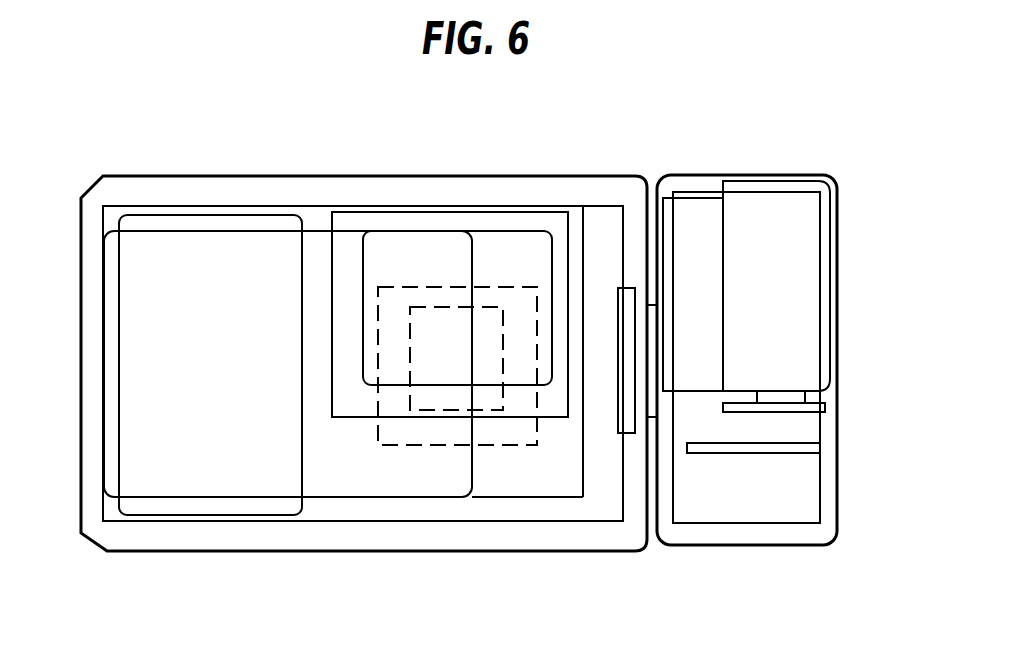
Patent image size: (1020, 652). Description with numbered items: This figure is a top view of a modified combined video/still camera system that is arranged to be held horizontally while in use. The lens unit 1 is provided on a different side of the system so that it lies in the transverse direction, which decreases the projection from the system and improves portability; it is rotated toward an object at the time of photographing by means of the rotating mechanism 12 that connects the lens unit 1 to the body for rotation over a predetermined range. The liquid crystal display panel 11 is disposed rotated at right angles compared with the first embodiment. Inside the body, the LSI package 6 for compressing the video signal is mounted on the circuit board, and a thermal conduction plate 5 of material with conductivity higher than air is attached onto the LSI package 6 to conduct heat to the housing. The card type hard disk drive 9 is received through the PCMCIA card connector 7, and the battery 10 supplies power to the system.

The lens unit 1 is at (797, 263).
The thermal conduction plate 5 is at (378, 426).
The LSI package 6 is at (507, 395).
The PCMCIA card connector 7 is at (563, 507).
The card type hard disk drive 9 is at (425, 475).
The battery 10 is at (223, 257).
The liquid crystal display panel 11 is at (426, 252).
The rotating mechanism 12 is at (628, 323).